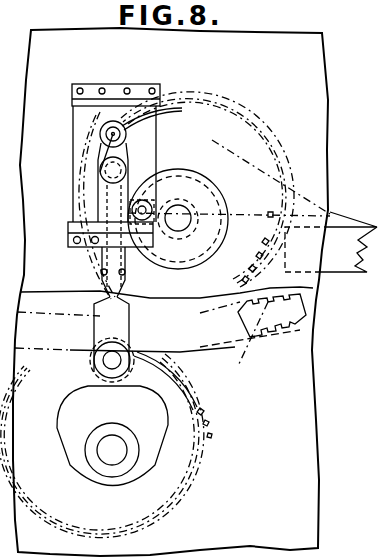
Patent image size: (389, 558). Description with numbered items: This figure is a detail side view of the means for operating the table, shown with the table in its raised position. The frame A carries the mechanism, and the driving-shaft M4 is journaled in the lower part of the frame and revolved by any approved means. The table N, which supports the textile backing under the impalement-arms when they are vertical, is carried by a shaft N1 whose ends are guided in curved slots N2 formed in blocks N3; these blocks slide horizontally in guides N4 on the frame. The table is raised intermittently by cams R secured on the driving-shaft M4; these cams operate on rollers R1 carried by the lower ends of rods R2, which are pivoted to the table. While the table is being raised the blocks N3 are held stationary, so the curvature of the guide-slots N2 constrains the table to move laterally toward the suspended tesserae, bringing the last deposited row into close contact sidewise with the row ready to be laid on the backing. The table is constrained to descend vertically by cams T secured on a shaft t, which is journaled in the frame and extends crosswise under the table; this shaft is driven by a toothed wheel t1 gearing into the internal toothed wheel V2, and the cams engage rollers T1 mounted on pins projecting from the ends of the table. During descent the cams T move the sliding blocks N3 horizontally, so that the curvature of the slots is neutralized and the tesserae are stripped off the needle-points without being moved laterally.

The frame A is at (142, 319).
The table N is at (186, 195).
The shaft N1 is at (117, 131).
The curved slots N2 is at (100, 174).
The blocks N3 is at (100, 132).
The guides N4 is at (115, 93).
The cams T is at (229, 204).
The rollers T1 is at (150, 203).
The shaft t is at (233, 267).
The toothed wheel t1 is at (262, 243).
The internal toothed wheel V2 is at (272, 339).
The cams R is at (106, 445).
The rollers R1 is at (128, 373).
The rods R2 is at (111, 334).
The driving-shaft M4 is at (118, 453).